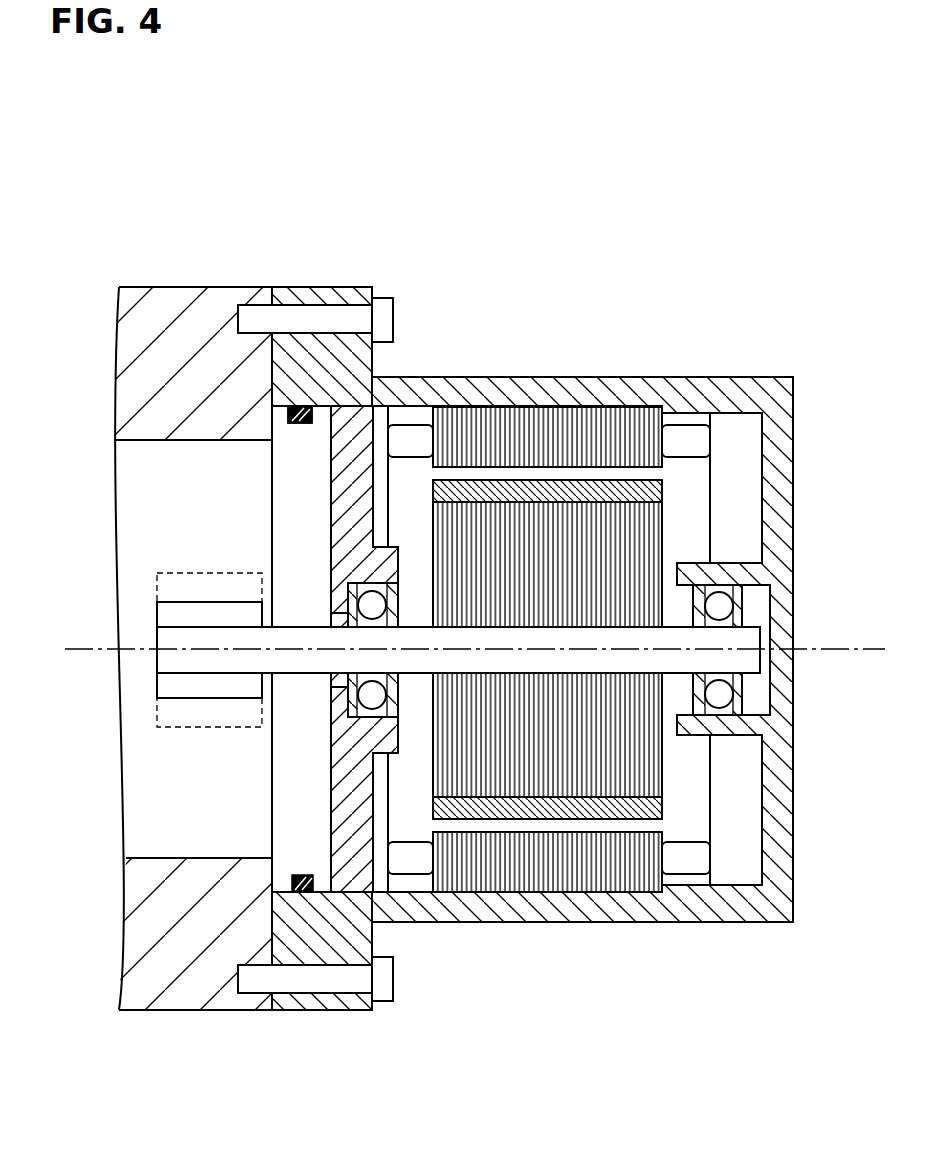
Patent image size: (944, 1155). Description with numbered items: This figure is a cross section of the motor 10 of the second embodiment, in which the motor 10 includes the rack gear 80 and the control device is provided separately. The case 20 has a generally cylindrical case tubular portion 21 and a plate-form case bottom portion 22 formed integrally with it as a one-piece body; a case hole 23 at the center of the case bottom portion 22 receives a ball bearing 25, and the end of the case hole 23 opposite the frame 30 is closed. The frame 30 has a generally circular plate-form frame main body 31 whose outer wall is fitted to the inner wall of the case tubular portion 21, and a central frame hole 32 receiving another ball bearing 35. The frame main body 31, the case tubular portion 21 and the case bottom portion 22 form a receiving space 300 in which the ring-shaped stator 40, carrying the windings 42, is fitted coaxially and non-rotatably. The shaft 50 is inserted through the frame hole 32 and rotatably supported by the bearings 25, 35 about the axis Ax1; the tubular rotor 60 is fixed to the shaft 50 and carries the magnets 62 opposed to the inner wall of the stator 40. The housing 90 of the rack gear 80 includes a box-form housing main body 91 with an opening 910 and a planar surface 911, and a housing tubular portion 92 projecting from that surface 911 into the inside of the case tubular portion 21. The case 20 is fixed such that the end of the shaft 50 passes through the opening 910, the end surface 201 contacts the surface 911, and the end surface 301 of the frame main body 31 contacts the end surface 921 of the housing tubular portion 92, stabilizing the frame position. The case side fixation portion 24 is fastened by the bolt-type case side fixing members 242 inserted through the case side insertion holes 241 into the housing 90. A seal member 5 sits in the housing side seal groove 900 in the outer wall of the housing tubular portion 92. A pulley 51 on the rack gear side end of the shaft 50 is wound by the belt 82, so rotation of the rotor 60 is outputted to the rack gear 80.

The motor 10 is at (651, 147).
The seal member 5 is at (330, 918).
The case 20 is at (618, 385).
The case tubular portion 21 is at (650, 385).
The case bottom portion 22 is at (783, 499).
The case hole 23 is at (747, 710).
The case side fixation portion 24 is at (285, 295).
The case side insertion holes 241 is at (307, 333).
The case side fixing members 242 is at (394, 321).
The bearing 25 is at (725, 697).
The end surface 201 is at (295, 890).
The frame 30 is at (337, 462).
The frame main body 31 is at (330, 493).
The frame hole 32 is at (350, 680).
The bearing 35 is at (372, 700).
The receiving space 300 is at (402, 523).
The end surface 301 is at (330, 547).
The stator 40 is at (545, 415).
The windings 42 is at (689, 427).
The rotor 60 is at (557, 790).
The magnets 62 is at (617, 818).
The shaft 50 is at (237, 665).
The pulley 51 is at (203, 687).
The rack gear 80 is at (137, 295).
The belt 82 is at (162, 717).
The housing 90 is at (170, 295).
The housing main body 91 is at (203, 295).
The housing tubular portion 92 is at (322, 412).
The end surface 921 is at (313, 412).
The housing side seal groove 900 is at (308, 893).
The opening 910 is at (340, 425).
The surface 911 is at (300, 953).
The axis Ax1 is at (85, 650).